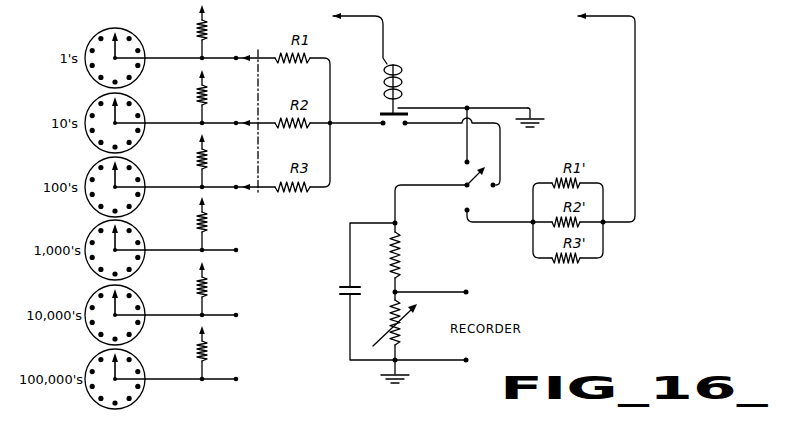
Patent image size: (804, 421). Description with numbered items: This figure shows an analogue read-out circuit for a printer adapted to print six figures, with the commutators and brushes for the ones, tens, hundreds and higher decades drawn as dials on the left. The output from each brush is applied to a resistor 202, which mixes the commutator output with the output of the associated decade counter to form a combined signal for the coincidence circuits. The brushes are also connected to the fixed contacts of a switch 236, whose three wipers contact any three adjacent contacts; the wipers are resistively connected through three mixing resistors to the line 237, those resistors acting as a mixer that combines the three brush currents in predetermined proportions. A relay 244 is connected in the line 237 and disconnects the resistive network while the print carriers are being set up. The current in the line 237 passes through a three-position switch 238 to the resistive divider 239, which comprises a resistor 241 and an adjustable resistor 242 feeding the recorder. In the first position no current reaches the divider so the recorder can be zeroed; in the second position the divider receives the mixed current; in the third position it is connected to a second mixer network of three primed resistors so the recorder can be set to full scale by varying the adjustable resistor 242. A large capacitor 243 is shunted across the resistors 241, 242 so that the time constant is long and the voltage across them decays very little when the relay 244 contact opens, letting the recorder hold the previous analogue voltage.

The resistor 202 is at (181, 193).
The switch 236 is at (252, 52).
The line 237 is at (350, 126).
The switch 238 is at (465, 172).
The resistive divider 239 is at (407, 281).
The resistor 241 is at (403, 243).
The adjustable resistor 242 is at (403, 345).
The capacitor 243 is at (347, 286).
The relay 244 is at (408, 104).